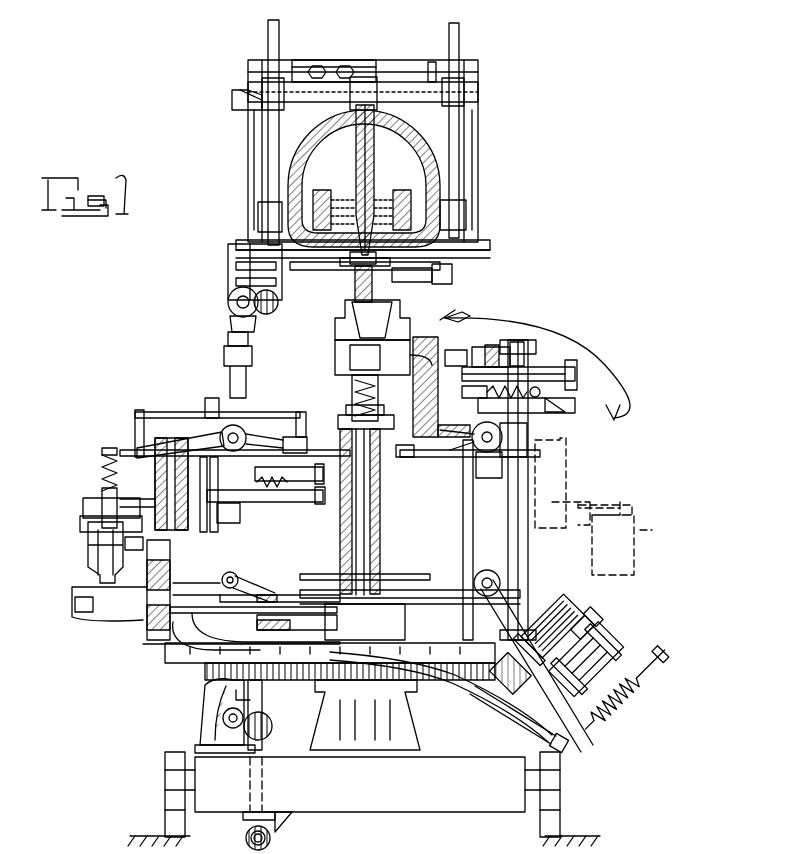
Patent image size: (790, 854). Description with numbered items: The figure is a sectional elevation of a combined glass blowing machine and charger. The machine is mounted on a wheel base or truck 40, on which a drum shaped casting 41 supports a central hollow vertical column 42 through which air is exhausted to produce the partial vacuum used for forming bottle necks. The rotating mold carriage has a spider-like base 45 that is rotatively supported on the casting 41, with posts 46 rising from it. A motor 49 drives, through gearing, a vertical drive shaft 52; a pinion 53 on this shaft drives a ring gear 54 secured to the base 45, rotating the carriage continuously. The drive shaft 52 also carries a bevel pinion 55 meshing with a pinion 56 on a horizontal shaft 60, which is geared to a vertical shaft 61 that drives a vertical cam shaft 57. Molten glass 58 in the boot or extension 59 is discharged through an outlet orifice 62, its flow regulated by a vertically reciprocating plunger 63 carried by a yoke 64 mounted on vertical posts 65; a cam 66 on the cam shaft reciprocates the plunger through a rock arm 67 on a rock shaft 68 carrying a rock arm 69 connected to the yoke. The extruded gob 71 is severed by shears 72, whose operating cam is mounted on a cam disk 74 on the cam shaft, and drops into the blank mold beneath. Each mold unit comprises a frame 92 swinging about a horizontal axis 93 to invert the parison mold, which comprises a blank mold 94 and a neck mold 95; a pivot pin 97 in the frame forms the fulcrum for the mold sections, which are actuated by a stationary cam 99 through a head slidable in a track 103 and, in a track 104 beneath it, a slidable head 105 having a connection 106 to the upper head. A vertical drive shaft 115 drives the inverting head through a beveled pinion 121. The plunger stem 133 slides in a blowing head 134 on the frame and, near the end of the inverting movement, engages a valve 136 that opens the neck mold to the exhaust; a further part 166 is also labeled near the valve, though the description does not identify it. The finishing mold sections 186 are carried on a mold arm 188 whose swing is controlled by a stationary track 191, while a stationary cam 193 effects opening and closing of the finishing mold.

The wheel base or truck 40 is at (388, 802).
The drum shaped casting 41 is at (379, 716).
The central hollow vertical column 42 is at (410, 534).
The base 45 is at (206, 627).
The posts 46 is at (369, 488).
The motor 49 is at (196, 716).
The vertical drive shaft 52 is at (238, 746).
The pinion 53 is at (330, 662).
The ring gear 54 is at (350, 687).
The bevel pinion 55 is at (250, 820).
The pinion 56 is at (281, 839).
The vertical cam shaft 57 is at (343, 155).
The molten glass 58 is at (390, 195).
The boot or extension 59 is at (374, 184).
The horizontal shaft 60 is at (231, 841).
The vertical shaft 61 is at (257, 342).
The outlet orifice 62 is at (364, 275).
The plunger 63 is at (346, 166).
The yoke 64 is at (363, 69).
The vertical posts 65 is at (361, 132).
The cam 66 is at (217, 98).
The rock arm 67 is at (334, 57).
The rock shaft 68 is at (432, 66).
The rock arm 69 is at (340, 55).
The gob 71 is at (403, 283).
The shears 72 is at (350, 275).
The cam disk 74 is at (230, 272).
The frame 92 is at (186, 412).
The horizontal axis 93 is at (518, 450).
The blank mold 94 is at (376, 320).
The neck mold 95 is at (232, 436).
The pivot pin 97 is at (256, 452).
The stationary cam 99 is at (338, 429).
The track 103 is at (576, 412).
The track 104 is at (307, 512).
The slidable head 105 is at (504, 353).
The connection 106 is at (554, 385).
The vertical drive shaft 115 is at (336, 540).
The beveled pinion 121 is at (461, 661).
The stem 133 is at (83, 469).
The blowing head 134 is at (84, 507).
The valve 136 is at (352, 396).
The washer 166 is at (348, 410).
The finishing mold sections 186 is at (377, 611).
The mold arm 188 is at (633, 689).
The stationary track 191 is at (232, 653).
The stationary cam 193 is at (327, 575).